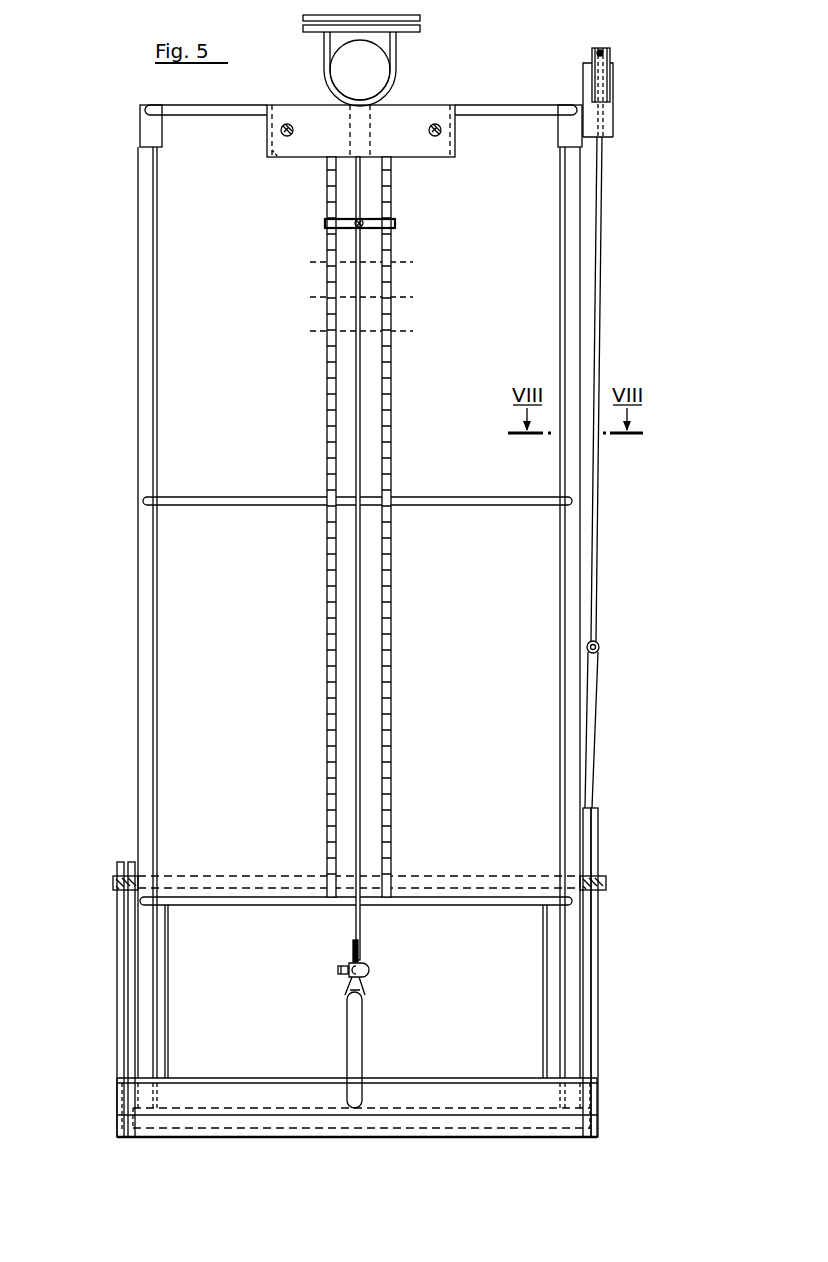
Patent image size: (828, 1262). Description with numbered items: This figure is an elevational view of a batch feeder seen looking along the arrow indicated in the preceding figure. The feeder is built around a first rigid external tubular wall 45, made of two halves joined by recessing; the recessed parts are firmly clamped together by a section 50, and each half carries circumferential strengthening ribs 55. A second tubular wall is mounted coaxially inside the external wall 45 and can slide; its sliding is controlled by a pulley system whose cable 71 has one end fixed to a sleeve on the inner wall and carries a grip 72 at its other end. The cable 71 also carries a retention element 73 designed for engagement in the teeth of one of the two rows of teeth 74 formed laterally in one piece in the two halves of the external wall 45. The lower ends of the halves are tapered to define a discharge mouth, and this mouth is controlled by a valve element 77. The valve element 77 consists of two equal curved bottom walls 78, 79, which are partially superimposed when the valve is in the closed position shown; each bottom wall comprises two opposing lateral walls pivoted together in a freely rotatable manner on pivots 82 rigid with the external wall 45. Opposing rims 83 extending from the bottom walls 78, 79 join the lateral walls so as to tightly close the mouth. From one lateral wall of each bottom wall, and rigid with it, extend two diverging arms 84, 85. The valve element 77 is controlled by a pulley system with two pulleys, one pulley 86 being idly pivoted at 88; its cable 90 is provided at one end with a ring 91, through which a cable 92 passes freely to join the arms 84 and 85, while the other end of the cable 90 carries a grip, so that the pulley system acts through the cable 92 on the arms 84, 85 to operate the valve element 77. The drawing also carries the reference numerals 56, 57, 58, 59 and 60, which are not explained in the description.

The first rigid external tubular wall 45 is at (547, 588).
The section 50 is at (140, 748).
The circumferential strengthening ribs 55 is at (215, 116).
The pipe 56 is at (385, 72).
The mounting plate 57 is at (399, 45).
The head block 58 is at (315, 148).
The bolt 59 is at (287, 137).
The slot 60 is at (278, 160).
The cable 71 is at (361, 710).
The grip 72 is at (358, 1032).
The retention element 73 is at (377, 226).
The rows of teeth 74 is at (327, 356).
The valve element 77 is at (116, 1094).
The curved bottom wall 78 is at (303, 1126).
The curved bottom wall 79 is at (403, 1130).
The pivots 82 is at (112, 893).
The rims 83 is at (253, 1090).
The arm 84 is at (133, 1003).
The arm 85 is at (125, 945).
The pulley 86 is at (592, 58).
The pivot 88 is at (592, 74).
The cable 90 is at (601, 52).
The ring 91 is at (599, 650).
The cable 92 is at (598, 745).